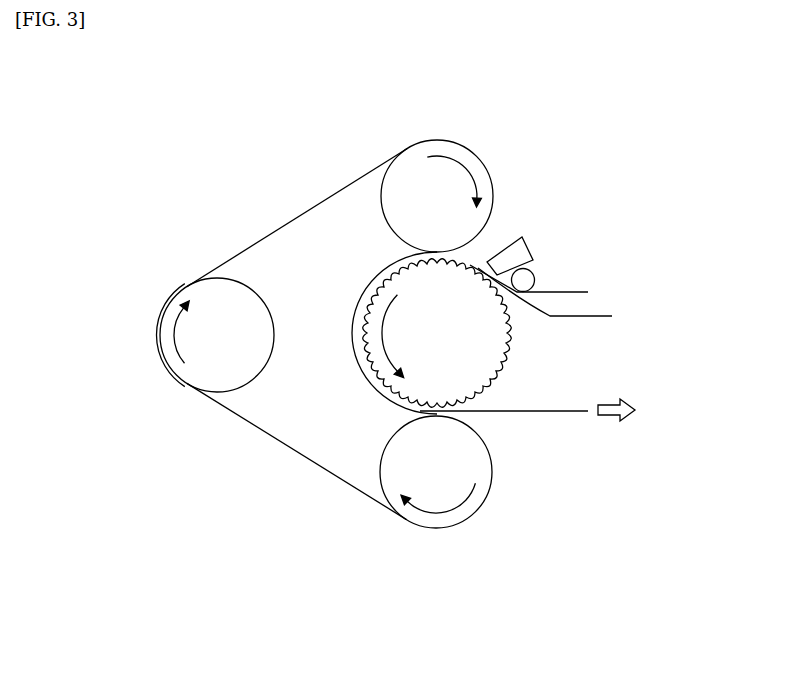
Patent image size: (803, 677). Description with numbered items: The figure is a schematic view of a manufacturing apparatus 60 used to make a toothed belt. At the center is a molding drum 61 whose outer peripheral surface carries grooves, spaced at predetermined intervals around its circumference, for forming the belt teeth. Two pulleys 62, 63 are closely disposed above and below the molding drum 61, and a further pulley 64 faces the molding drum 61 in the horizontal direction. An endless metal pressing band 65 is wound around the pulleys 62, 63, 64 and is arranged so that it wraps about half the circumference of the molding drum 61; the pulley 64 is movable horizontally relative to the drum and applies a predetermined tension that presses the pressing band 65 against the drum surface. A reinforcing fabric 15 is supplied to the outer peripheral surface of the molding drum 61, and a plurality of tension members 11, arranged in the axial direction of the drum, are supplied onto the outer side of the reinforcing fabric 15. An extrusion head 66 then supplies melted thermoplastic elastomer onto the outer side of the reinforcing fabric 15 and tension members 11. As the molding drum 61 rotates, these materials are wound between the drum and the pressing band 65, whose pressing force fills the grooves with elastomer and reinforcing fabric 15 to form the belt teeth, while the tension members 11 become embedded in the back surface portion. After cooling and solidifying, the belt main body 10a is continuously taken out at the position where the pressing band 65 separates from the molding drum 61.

The manufacturing apparatus 60 is at (258, 123).
The molding drum 61 is at (488, 362).
The pulley 62 is at (437, 141).
The pulley 63 is at (437, 523).
The pulley 64 is at (204, 283).
The pressing band 65 is at (297, 222).
The extrusion head 66 is at (527, 252).
The tension members 11 is at (567, 290).
The reinforcing fabric 15 is at (588, 317).
The belt main body 10a is at (553, 412).